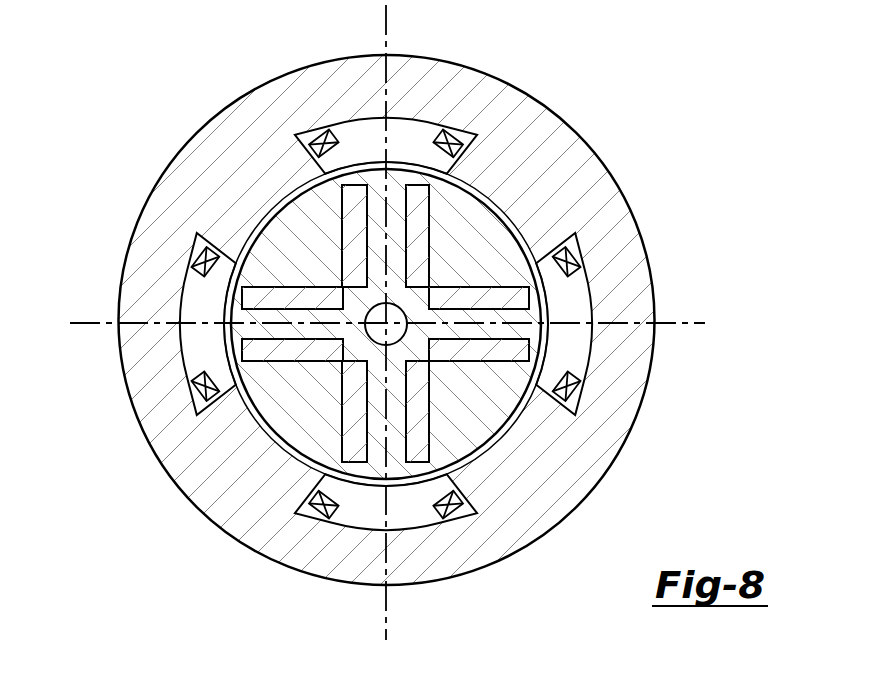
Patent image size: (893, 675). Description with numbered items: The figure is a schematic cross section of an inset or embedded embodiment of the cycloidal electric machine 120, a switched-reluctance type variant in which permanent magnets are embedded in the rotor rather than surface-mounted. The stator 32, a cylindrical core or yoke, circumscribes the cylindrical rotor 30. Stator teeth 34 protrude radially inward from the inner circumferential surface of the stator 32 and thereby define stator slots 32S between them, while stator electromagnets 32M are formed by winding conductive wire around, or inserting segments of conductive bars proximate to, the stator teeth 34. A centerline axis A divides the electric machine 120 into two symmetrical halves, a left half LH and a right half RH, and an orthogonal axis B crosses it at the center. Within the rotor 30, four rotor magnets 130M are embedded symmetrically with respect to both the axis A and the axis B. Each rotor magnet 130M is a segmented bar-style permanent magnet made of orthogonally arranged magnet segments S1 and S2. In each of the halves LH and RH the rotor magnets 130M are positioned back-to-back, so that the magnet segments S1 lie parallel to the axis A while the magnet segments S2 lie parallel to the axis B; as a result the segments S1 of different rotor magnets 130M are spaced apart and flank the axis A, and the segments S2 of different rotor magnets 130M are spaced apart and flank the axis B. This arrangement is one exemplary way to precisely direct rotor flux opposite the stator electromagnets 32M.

The electric machine 120 is at (446, 340).
The rotor 30 is at (446, 320).
The stator 32 is at (446, 313).
The stator electromagnets 32M is at (455, 132).
The stator slots 32S is at (574, 303).
The stator teeth 34 is at (233, 156).
The rotor magnets 130M is at (446, 320).
The magnet segment S1 is at (385, 323).
The magnet segment S2 is at (385, 324).
The axis A is at (386, 603).
The axis B is at (88, 324).
The left half LH is at (319, 605).
The right half RH is at (446, 605).